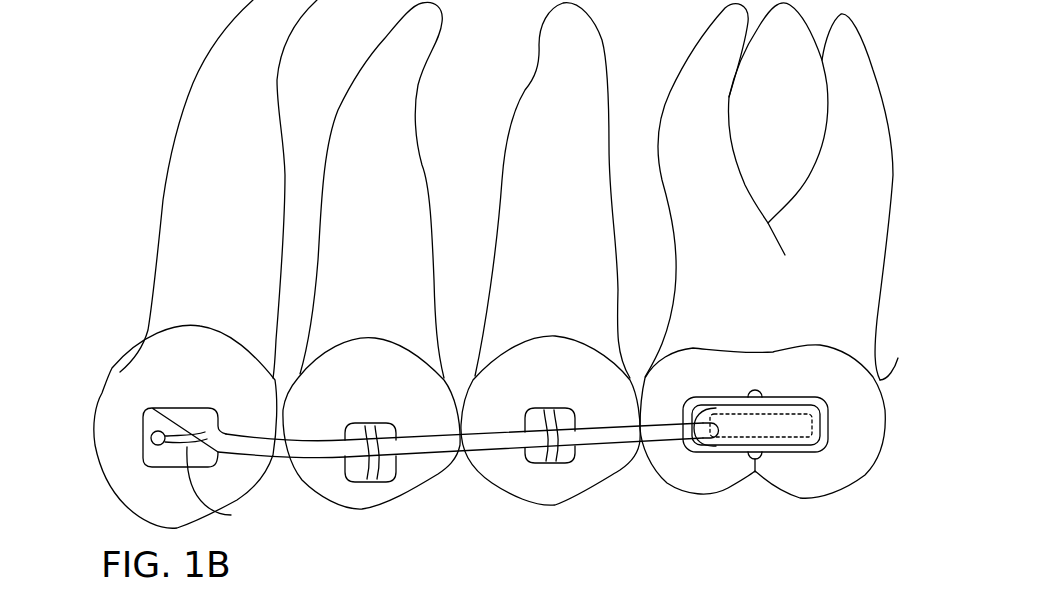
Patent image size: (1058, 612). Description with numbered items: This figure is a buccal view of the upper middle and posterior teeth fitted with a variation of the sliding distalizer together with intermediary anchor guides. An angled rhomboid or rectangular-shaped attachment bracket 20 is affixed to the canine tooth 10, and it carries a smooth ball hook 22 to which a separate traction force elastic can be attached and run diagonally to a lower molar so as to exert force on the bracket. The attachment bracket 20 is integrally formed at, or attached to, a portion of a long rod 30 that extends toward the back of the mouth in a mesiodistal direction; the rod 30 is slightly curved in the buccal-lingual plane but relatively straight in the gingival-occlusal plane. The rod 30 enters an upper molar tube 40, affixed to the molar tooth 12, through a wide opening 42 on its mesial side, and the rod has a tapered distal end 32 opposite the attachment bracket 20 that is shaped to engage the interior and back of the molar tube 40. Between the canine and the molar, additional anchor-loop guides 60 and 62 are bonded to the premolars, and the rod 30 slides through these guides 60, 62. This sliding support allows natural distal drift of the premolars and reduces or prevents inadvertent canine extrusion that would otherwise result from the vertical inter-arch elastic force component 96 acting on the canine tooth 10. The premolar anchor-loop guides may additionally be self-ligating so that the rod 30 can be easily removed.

The canine tooth 10 is at (158, 383).
The molar tooth 12 is at (837, 383).
The attachment bracket 20 is at (167, 457).
The ball hook 22 is at (151, 437).
The vertical inter-arch elastic force component 96 is at (223, 487).
The rod 30 is at (317, 450).
The anchor-loop guide 60 is at (380, 472).
The anchor-loop guide 62 is at (548, 463).
The upper molar tube 40 is at (795, 410).
The tapered distal end 32 is at (783, 433).
The wide opening 42 is at (697, 442).